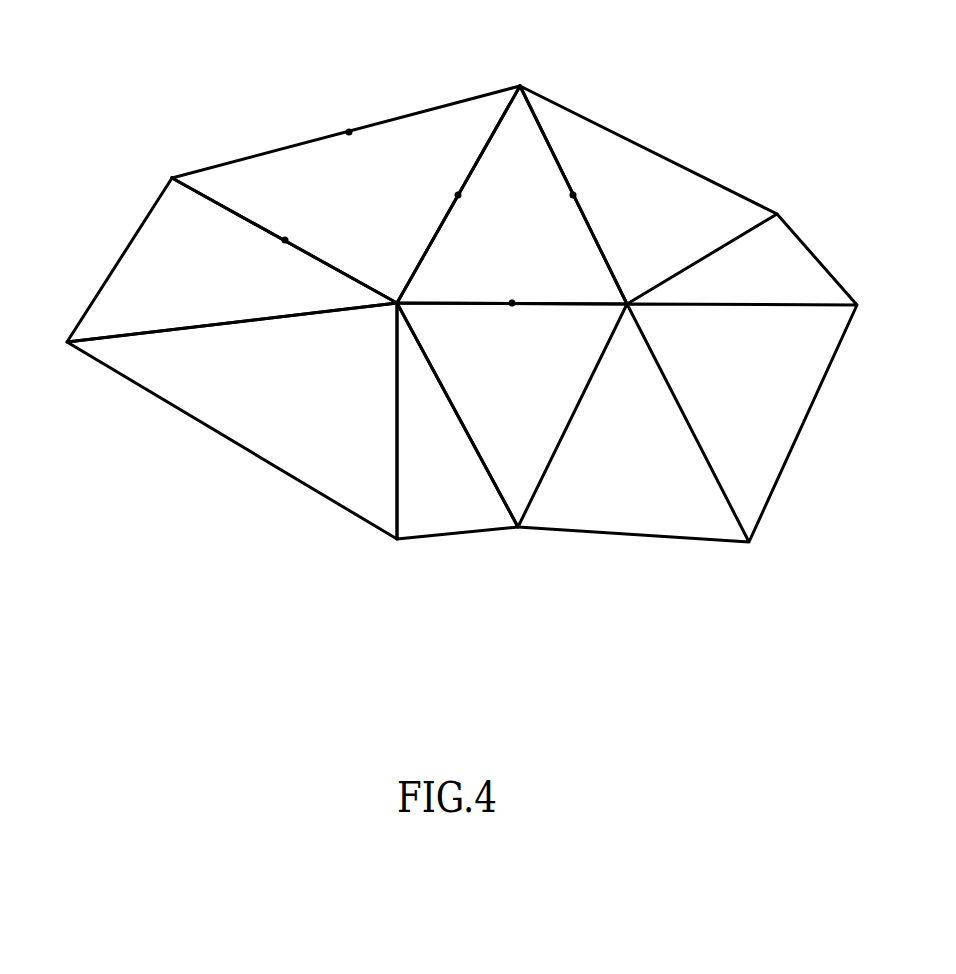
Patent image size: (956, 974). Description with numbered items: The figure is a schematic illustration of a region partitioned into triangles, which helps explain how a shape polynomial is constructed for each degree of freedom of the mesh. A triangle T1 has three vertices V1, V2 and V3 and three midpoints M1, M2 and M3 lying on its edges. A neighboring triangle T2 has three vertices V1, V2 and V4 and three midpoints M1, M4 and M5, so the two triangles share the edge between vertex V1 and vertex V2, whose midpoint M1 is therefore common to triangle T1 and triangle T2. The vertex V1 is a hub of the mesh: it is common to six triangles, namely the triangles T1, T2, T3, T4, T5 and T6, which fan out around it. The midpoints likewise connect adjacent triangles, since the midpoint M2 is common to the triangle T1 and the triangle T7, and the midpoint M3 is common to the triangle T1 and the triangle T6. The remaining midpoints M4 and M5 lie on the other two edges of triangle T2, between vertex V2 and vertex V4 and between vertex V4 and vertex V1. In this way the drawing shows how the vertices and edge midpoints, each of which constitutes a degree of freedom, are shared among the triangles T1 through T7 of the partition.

The vertex V1 is at (397, 303).
The vertex V2 is at (520, 85).
The vertex V3 is at (627, 305).
The vertex V4 is at (172, 178).
The midpoint M1 is at (458, 195).
The midpoint M2 is at (573, 195).
The midpoint M3 is at (512, 303).
The midpoint M4 is at (349, 132).
The midpoint M5 is at (285, 240).
The triangle T1 is at (525, 163).
The triangle T2 is at (287, 175).
The triangle T3 is at (168, 277).
The triangle T4 is at (220, 392).
The triangle T5 is at (455, 485).
The triangle T6 is at (557, 377).
The triangle T7 is at (708, 220).